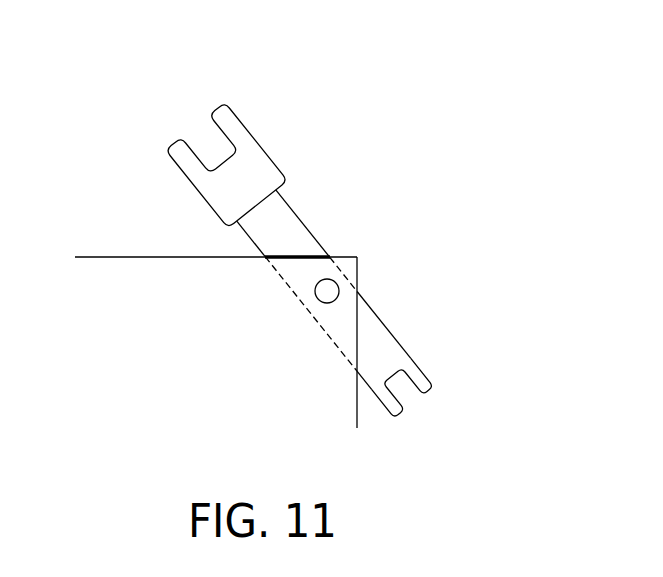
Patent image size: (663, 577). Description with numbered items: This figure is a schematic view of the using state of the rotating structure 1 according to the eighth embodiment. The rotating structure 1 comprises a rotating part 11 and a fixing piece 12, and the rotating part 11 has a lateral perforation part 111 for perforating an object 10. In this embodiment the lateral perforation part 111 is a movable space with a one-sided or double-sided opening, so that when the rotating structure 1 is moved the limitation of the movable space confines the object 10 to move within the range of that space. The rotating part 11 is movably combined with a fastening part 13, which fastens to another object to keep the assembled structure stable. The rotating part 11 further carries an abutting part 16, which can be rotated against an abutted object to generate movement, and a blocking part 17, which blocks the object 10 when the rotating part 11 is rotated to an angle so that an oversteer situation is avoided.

The rotating structure 1 is at (203, 98).
The object 10 is at (105, 257).
The rotating part 11 is at (262, 232).
The lateral perforation part 111 is at (368, 328).
The fixing piece 12 is at (325, 293).
The fastening part 13 is at (261, 139).
The abutting part 16 is at (421, 380).
The blocking part 17 is at (302, 252).